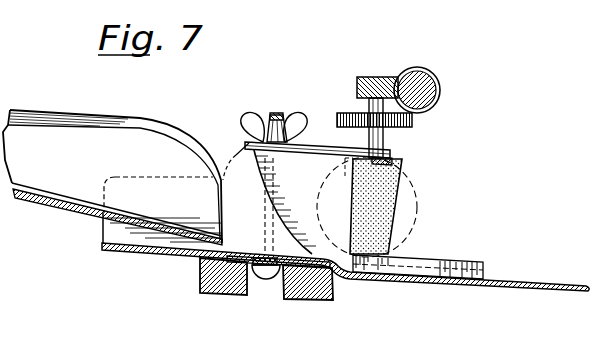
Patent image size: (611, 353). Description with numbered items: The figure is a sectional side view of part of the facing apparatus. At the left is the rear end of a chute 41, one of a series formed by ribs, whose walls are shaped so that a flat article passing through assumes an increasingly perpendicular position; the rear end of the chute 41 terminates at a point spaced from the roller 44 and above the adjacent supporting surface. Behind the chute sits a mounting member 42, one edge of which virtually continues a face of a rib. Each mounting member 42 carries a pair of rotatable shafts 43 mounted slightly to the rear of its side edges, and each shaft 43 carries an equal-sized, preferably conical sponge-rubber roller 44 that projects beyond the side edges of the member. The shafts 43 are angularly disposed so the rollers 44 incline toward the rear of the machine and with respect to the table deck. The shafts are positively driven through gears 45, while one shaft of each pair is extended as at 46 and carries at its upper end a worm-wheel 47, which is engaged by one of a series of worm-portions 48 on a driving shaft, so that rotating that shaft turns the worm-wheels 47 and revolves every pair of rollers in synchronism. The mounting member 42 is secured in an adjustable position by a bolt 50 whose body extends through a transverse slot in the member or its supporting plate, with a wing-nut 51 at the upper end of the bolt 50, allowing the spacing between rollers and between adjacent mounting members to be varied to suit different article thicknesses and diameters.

The chute 41 is at (112, 177).
The mounting member 42 is at (425, 267).
The rotatable shaft 43 is at (392, 162).
The roller 44 is at (378, 209).
The gear 45 is at (413, 123).
The shaft extension 46 is at (384, 140).
The worm-wheel 47 is at (390, 65).
The worm-portion 48 is at (441, 62).
The bolt 50 is at (277, 116).
The wing-nut 51 is at (258, 122).